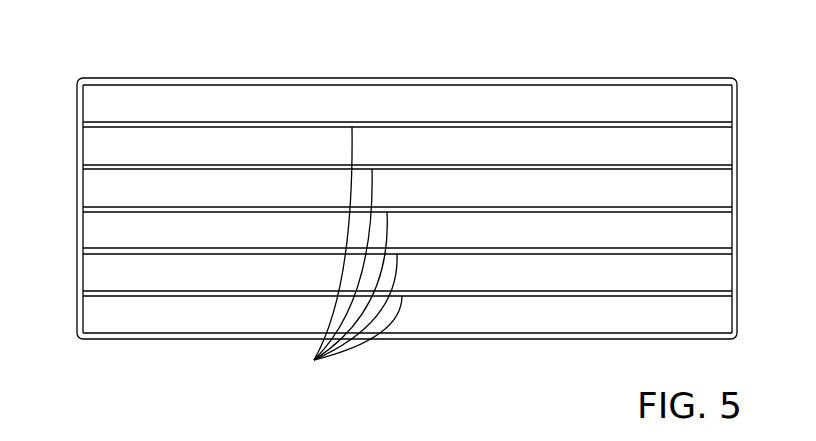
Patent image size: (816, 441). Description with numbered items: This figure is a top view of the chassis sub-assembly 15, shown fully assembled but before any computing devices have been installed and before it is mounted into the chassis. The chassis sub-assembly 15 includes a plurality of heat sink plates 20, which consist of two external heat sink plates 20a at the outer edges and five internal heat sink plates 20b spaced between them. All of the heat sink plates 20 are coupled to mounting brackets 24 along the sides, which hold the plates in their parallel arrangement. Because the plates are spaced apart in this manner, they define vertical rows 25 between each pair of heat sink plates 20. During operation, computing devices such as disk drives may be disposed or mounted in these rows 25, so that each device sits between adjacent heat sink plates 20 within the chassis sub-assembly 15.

The chassis sub-assembly 15 is at (76, 104).
The heat sink plates 20 is at (154, 78).
The external heat sink plates 20a is at (559, 78).
The internal heat sink plates 20b is at (347, 255).
The mounting brackets 24 is at (77, 185).
The vertical rows 25 is at (694, 144).